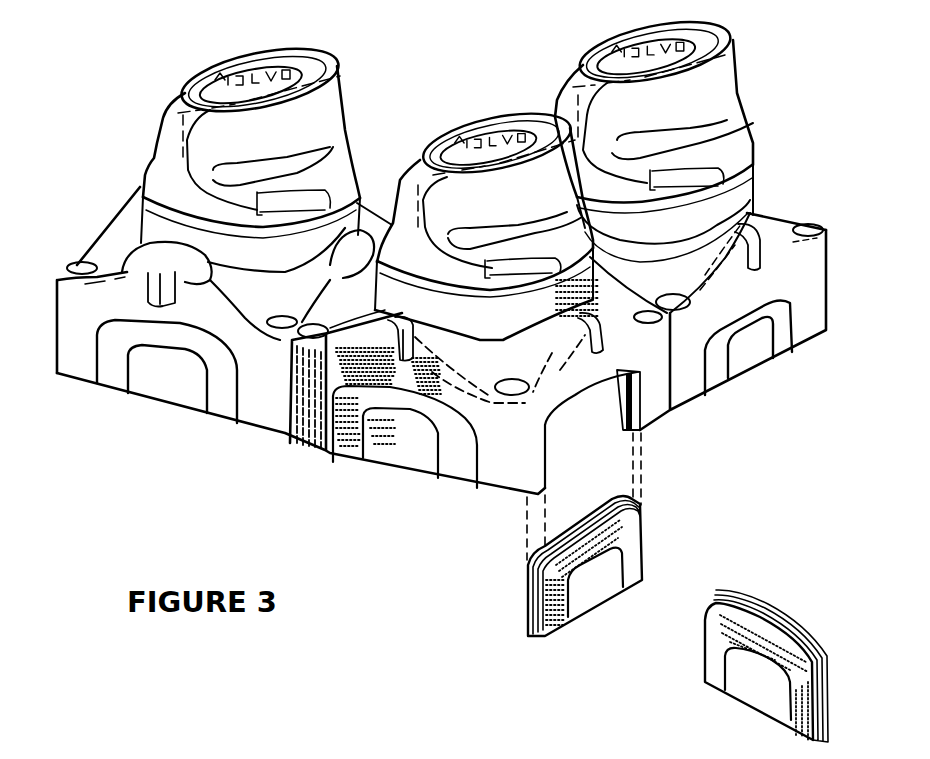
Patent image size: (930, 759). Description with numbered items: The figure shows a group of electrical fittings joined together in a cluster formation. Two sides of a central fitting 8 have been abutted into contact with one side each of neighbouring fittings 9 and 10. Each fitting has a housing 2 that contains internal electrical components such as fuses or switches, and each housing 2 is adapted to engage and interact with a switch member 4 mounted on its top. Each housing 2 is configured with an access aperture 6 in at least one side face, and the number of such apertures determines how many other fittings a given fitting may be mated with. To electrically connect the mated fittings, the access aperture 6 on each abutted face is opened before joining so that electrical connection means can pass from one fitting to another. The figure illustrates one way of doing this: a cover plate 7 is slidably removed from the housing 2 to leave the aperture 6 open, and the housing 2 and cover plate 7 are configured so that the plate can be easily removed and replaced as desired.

The housing 2 is at (78, 242).
The switch member 4 is at (290, 42).
The access aperture 6 is at (597, 422).
The cover plate 7 is at (740, 722).
The fitting 8 is at (465, 497).
The fitting 9 is at (177, 423).
The fitting 10 is at (790, 368).